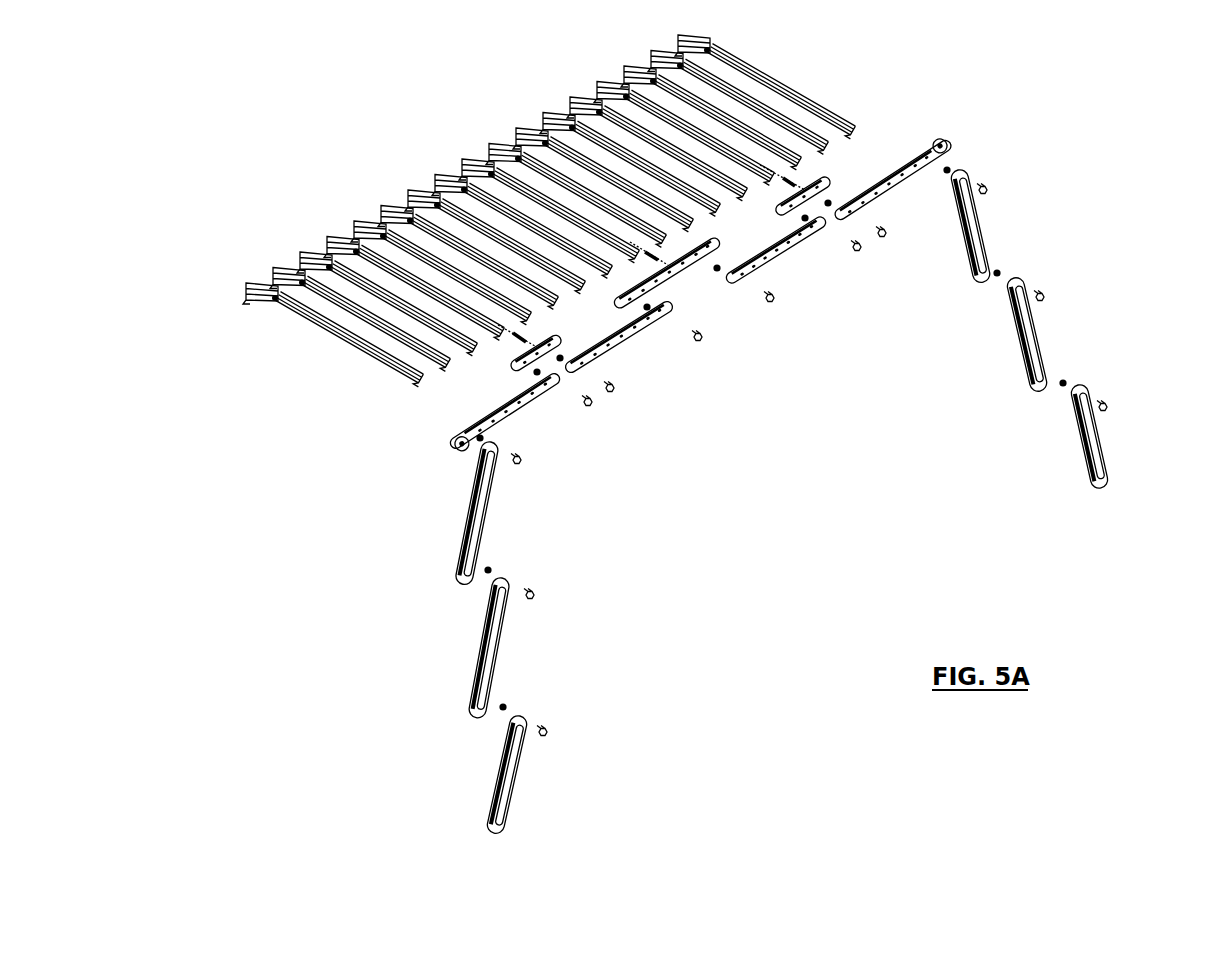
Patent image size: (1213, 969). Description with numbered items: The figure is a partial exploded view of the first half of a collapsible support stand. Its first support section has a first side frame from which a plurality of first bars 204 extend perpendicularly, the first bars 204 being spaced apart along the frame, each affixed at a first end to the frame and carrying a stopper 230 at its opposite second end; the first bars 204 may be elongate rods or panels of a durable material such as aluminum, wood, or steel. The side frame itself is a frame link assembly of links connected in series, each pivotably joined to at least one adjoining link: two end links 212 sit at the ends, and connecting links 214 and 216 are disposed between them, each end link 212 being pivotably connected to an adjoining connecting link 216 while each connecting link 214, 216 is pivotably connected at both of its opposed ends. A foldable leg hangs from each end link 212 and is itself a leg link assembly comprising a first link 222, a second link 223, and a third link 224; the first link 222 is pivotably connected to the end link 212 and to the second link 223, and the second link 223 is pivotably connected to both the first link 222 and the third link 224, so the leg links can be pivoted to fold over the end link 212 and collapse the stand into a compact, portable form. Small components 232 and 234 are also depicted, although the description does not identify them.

The first bars 204 is at (524, 200).
The end link 212 is at (940, 147).
The connecting link 214 is at (478, 155).
The connecting link 216 is at (597, 83).
The first link 222 is at (990, 230).
The second link 223 is at (1050, 343).
The third link 224 is at (1108, 447).
The stopper 230 is at (243, 280).
The bolt 232 is at (527, 467).
The bolt 234 is at (536, 601).